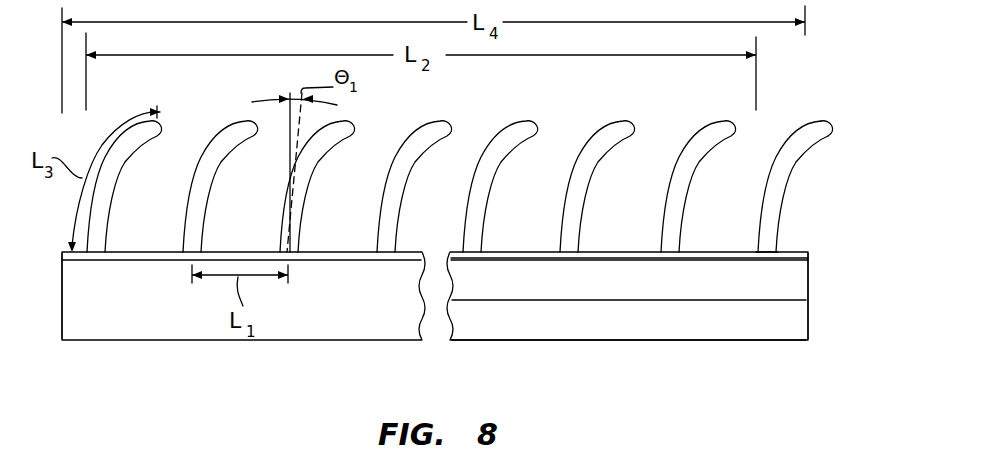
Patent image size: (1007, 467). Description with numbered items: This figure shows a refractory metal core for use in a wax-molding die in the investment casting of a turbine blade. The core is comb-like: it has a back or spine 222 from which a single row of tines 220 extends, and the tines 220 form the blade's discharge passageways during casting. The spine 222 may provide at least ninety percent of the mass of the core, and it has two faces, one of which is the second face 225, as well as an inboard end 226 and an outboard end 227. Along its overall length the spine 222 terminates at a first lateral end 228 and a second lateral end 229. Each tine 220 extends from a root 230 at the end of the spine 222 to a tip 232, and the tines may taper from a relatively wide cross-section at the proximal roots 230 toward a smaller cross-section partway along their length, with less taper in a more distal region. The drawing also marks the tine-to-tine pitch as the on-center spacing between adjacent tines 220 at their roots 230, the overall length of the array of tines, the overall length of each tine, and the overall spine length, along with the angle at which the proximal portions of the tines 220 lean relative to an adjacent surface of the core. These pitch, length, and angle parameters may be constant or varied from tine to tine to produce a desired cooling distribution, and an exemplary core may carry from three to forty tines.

The tine 220 is at (806, 124).
The spine 222 is at (658, 325).
The second face 225 is at (508, 312).
The inboard end 226 is at (566, 341).
The outboard end 227 is at (610, 257).
The first lateral end 228 is at (61, 307).
The second lateral end 229 is at (809, 315).
The root 230 is at (767, 242).
The tip 232 is at (832, 124).